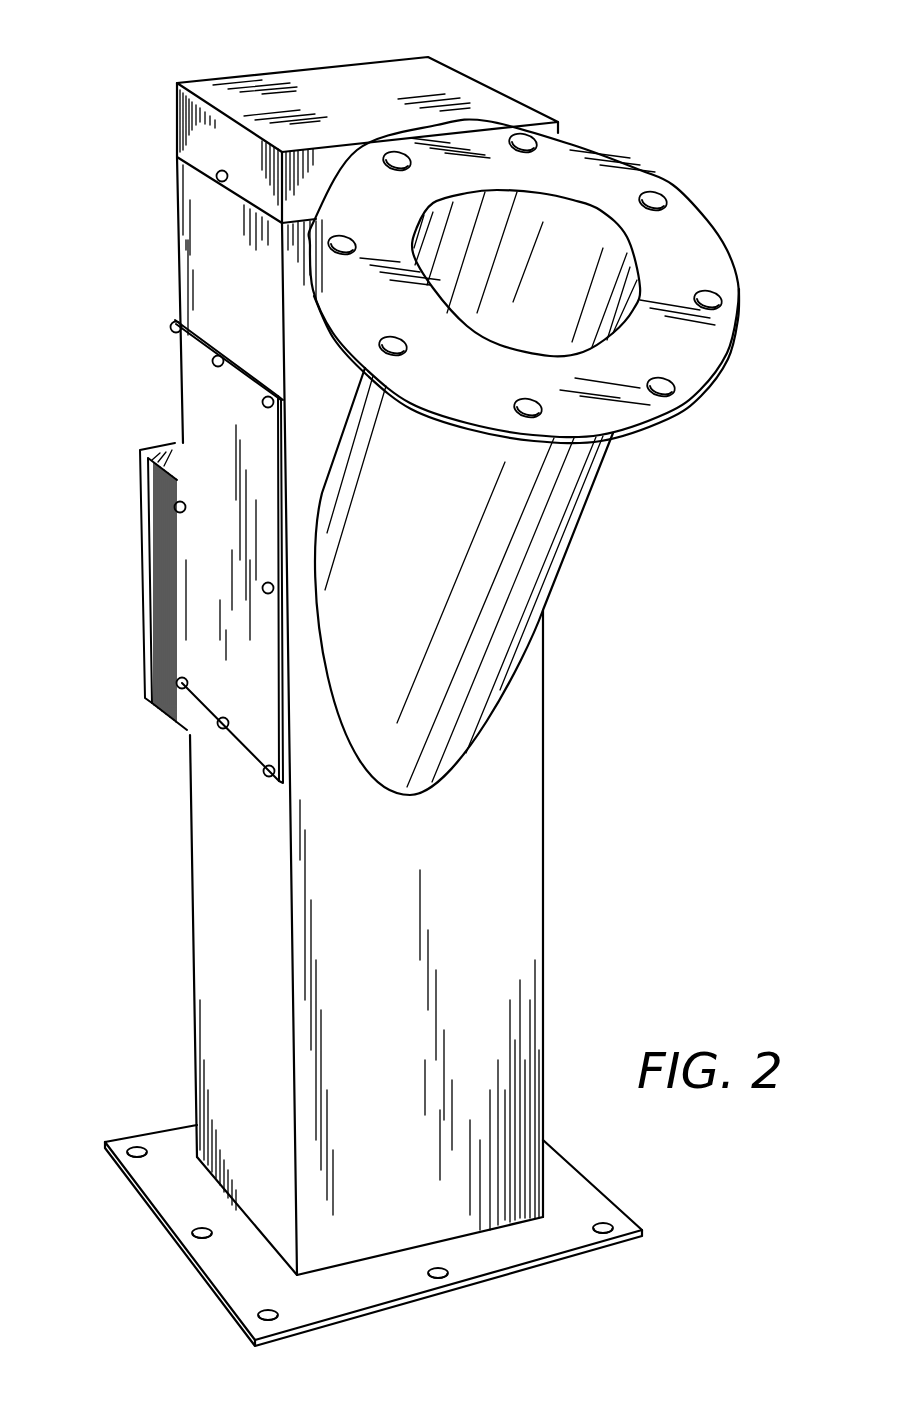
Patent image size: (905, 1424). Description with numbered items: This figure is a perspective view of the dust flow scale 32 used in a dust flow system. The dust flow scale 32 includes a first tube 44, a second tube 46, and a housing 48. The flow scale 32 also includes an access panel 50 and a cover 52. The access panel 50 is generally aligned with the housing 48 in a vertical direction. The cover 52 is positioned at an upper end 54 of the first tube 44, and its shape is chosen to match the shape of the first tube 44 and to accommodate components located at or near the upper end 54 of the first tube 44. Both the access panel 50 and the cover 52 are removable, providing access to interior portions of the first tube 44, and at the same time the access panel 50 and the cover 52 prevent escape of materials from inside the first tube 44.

The dust flow scale 32 is at (237, 62).
The first tube 44 is at (234, 849).
The second tube 46 is at (556, 565).
The housing 48 is at (158, 543).
The access panel 50 is at (198, 395).
The cover 52 is at (193, 135).
The upper end 54 is at (187, 250).